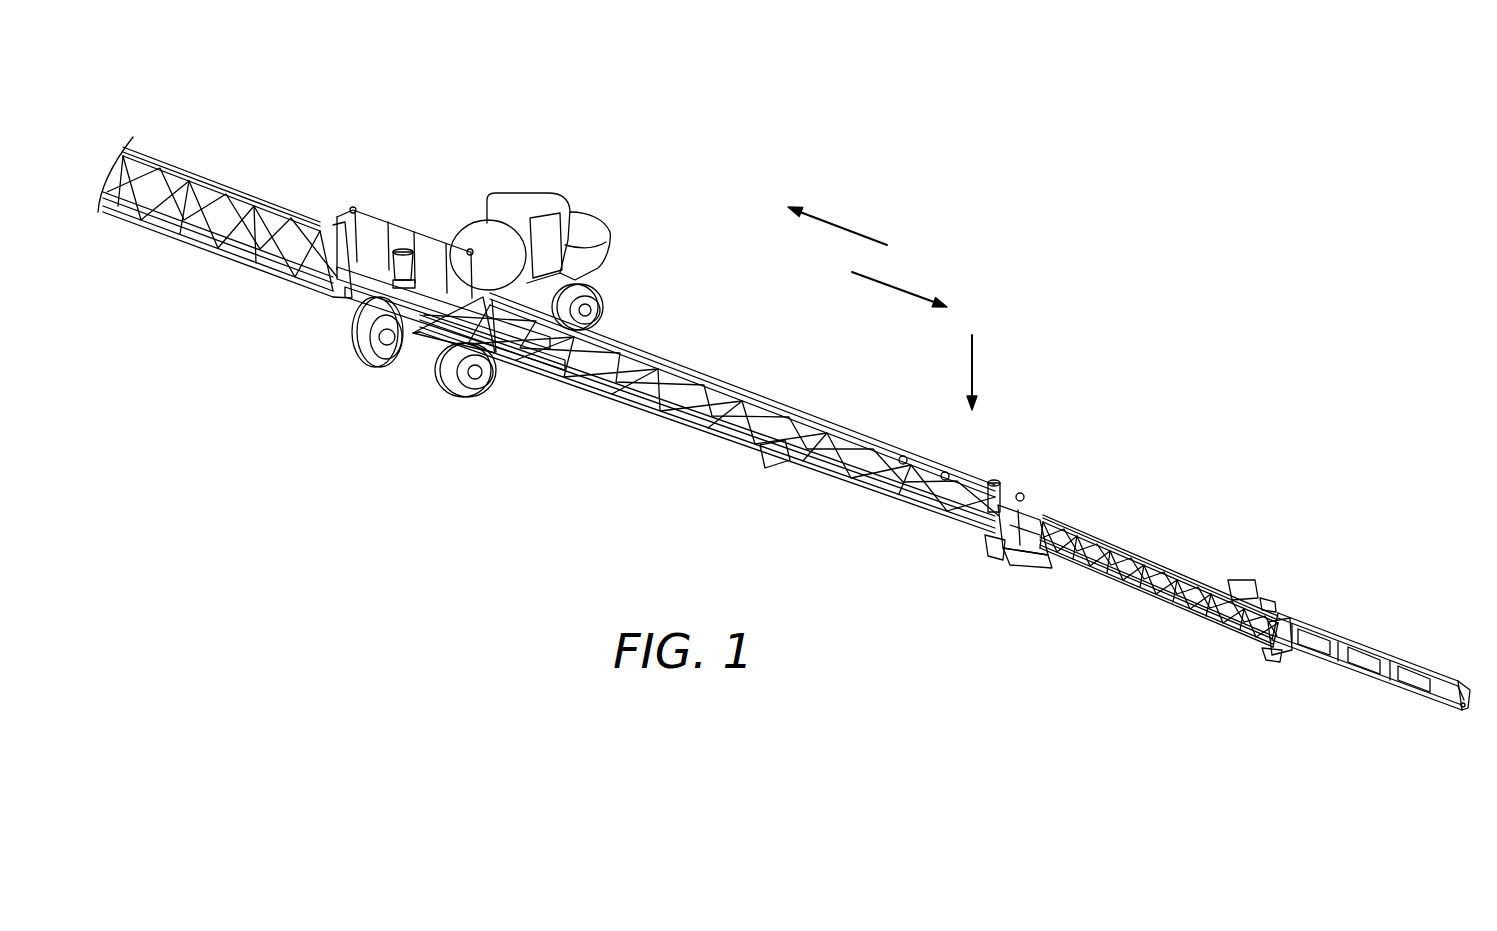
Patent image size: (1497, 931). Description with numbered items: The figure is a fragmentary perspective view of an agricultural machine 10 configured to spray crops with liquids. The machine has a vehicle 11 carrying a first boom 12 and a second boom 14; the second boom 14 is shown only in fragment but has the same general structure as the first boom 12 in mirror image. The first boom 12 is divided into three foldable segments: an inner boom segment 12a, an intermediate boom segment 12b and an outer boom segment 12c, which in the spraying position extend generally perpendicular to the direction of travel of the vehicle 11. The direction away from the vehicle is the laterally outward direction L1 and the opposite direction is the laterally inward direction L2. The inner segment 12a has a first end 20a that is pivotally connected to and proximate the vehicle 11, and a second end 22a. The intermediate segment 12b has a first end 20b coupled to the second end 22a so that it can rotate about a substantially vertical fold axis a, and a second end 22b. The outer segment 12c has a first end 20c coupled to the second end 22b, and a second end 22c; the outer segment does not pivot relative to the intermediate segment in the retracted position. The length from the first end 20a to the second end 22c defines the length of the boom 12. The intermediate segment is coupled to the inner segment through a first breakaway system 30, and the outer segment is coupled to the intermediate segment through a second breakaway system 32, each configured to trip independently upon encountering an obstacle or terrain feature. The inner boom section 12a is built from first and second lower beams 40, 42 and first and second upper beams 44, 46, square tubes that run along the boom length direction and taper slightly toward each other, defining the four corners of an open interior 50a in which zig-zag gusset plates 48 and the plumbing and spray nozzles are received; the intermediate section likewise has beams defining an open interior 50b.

The agricultural machine 10 is at (1000, 131).
The vehicle 11 is at (541, 190).
The first boom 12 is at (1107, 328).
The inner boom segment 12a is at (803, 373).
The intermediate boom segment 12b is at (1163, 525).
The outer boom segment 12c is at (1363, 613).
The second boom 14 is at (272, 152).
The first end of the inner segment 20a is at (423, 372).
The first end of the intermediate segment 20b is at (1030, 585).
The first end of the outer segment 20c is at (1272, 678).
The second end of the inner segment 22a is at (1020, 465).
The second end of the intermediate segment 22b is at (1292, 575).
The second end of the outer segment 22c is at (1448, 733).
The first breakaway system 30 is at (993, 575).
The second breakaway system 32 is at (1250, 660).
The first lower beam 40 is at (607, 398).
The second lower beam 42 is at (570, 378).
The first upper beam 44 is at (630, 340).
The second upper beam 46 is at (667, 350).
The upper front chord 48 is at (716, 387).
The open interior of the inner boom section 50a is at (702, 425).
The open interior of the intermediate boom section 50b is at (1148, 595).
The laterally outward direction L1 is at (905, 292).
The laterally inward direction L2 is at (852, 232).
The fold axis a is at (970, 362).